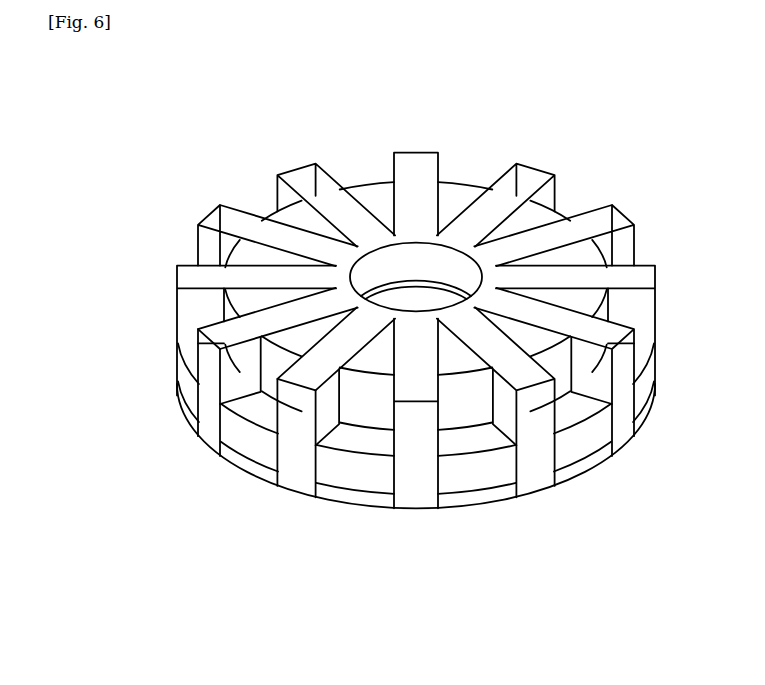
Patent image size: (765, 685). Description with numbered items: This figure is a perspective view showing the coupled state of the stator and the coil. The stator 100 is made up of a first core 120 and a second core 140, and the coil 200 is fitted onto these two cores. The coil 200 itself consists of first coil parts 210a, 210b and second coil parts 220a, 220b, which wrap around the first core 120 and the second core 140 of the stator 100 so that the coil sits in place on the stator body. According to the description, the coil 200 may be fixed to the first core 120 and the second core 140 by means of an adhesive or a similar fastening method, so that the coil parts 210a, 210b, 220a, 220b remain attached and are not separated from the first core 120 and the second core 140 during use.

The stator 100 is at (566, 122).
The first core 120 is at (567, 446).
The second core 140 is at (372, 188).
The coil 200 is at (228, 466).
The first coil part 210a is at (203, 398).
The first coil part 210b is at (296, 453).
The second coil part 220a is at (200, 331).
The second coil part 220b is at (309, 374).